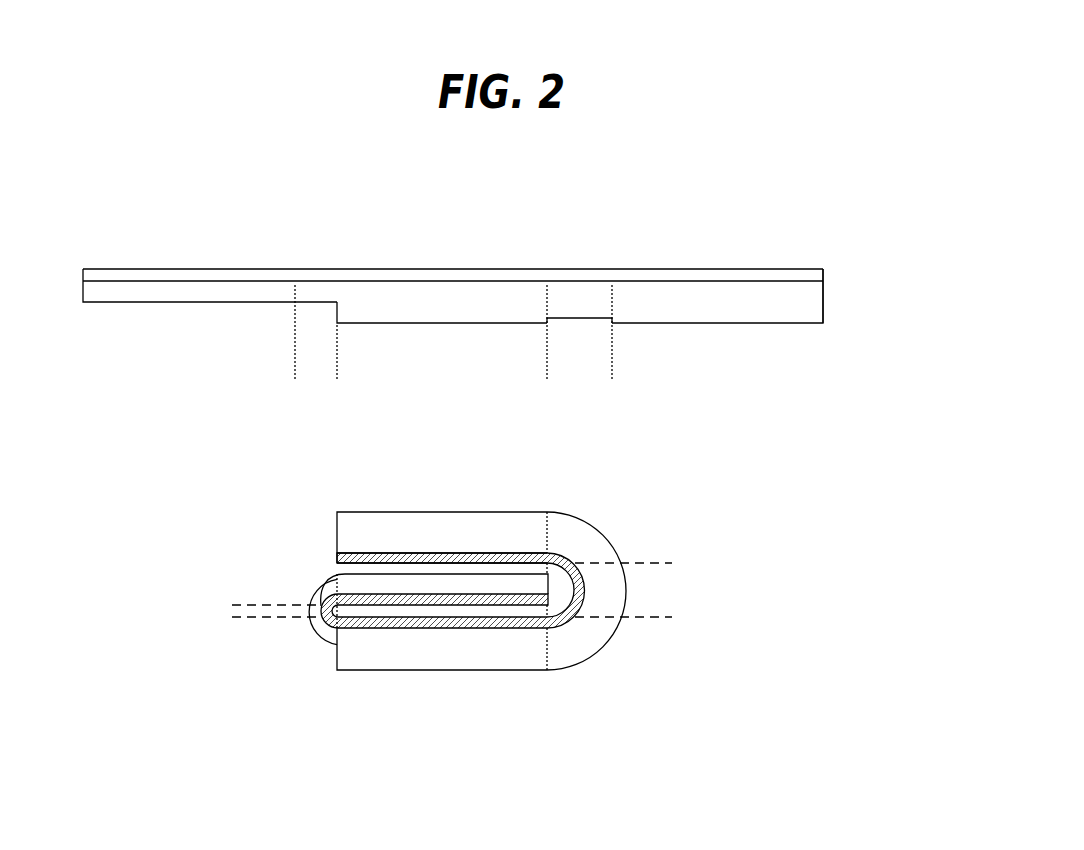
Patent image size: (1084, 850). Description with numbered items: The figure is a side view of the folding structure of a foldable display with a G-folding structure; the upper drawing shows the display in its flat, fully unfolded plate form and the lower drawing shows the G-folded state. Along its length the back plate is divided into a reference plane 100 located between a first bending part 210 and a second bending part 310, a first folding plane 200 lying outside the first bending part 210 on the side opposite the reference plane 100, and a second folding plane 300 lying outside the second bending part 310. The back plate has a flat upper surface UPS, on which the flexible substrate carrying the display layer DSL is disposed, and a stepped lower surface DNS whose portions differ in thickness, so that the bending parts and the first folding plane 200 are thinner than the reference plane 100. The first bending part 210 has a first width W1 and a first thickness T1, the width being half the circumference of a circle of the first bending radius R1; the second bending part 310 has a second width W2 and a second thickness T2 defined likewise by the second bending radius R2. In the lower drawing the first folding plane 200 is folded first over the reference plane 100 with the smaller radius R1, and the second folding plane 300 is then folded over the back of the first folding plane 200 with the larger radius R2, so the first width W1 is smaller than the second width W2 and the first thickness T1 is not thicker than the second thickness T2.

The reference plane 100 is at (441, 308).
The first folding plane 200 is at (200, 292).
The first bending part 210 is at (307, 291).
The second folding plane 300 is at (725, 308).
The second bending part 310 is at (567, 299).
The display layer DSL is at (797, 264).
The upper surface UPS is at (831, 281).
The lower surface DNS is at (831, 323).
The first thickness T1 is at (323, 336).
The second thickness T2 is at (597, 355).
The first width W1 is at (337, 373).
The second width W2 is at (612, 373).
The first bending radius R1 is at (238, 570).
The second bending radius R2 is at (685, 563).